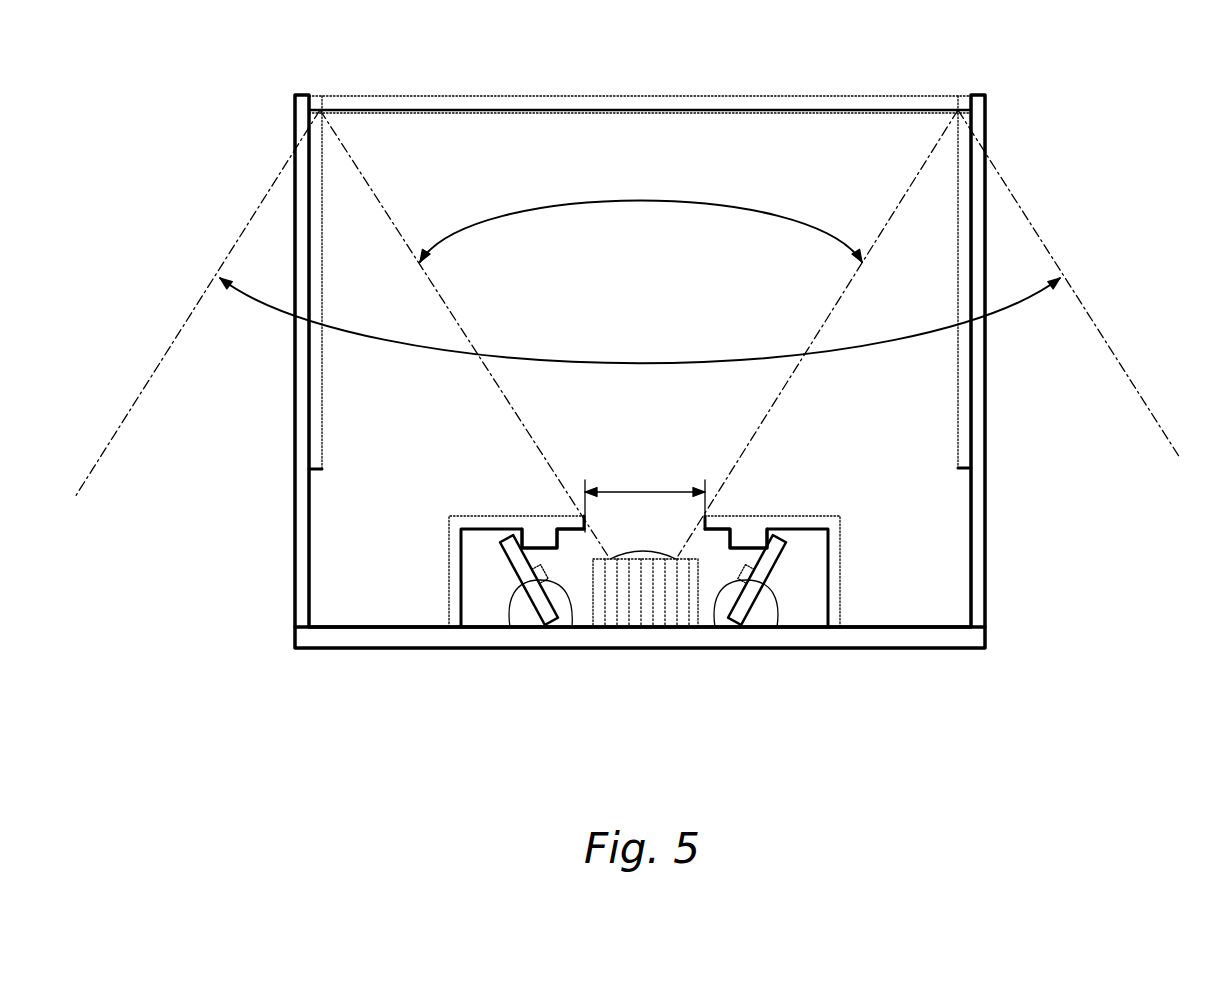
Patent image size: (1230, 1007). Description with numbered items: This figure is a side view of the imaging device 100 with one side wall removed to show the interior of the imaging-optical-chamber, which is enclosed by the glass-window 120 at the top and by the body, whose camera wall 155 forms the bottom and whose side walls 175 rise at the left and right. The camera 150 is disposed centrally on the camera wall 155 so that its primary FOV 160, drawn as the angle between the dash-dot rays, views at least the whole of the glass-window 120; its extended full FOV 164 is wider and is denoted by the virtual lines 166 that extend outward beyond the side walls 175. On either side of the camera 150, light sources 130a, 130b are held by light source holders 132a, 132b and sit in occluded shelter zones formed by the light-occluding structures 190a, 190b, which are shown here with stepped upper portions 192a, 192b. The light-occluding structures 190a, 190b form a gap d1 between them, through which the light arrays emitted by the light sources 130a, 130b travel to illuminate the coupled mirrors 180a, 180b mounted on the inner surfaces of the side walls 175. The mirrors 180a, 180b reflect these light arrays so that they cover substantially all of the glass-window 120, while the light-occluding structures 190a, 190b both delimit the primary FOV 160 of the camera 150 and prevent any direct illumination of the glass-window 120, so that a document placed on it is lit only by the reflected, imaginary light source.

The imaging device 100 is at (621, 394).
The glass-window 120 is at (713, 100).
The light source 130a is at (572, 627).
The light source 130b is at (717, 627).
The light source holder 132a is at (530, 585).
The light source holder 132b is at (756, 585).
The camera 150 is at (653, 605).
The camera wall 155 is at (860, 637).
The primary FOV 160 is at (639, 333).
The extended FOV 164 is at (640, 320).
The virtual lines 166 is at (147, 388).
The side walls 175 is at (297, 455).
The mirror 180a is at (325, 345).
The mirror 180b is at (957, 345).
The light-occluding structure 190a is at (448, 568).
The light-occluding structure 190b is at (843, 561).
The first mounting portion 192a is at (556, 514).
The second mounting portion 192b is at (729, 514).
The gap d1 is at (645, 497).